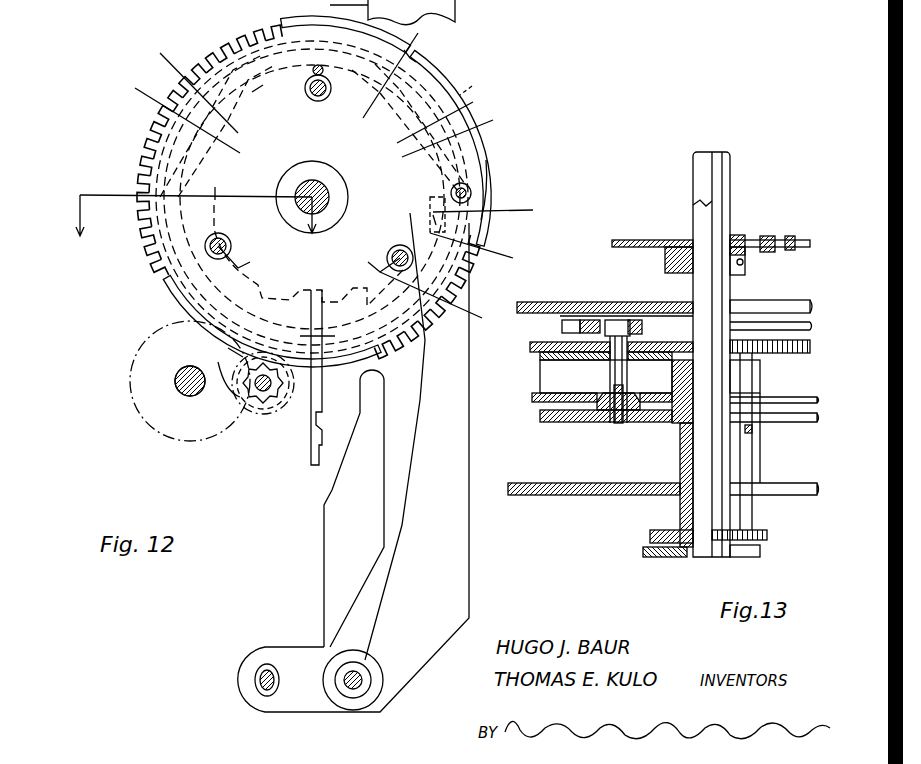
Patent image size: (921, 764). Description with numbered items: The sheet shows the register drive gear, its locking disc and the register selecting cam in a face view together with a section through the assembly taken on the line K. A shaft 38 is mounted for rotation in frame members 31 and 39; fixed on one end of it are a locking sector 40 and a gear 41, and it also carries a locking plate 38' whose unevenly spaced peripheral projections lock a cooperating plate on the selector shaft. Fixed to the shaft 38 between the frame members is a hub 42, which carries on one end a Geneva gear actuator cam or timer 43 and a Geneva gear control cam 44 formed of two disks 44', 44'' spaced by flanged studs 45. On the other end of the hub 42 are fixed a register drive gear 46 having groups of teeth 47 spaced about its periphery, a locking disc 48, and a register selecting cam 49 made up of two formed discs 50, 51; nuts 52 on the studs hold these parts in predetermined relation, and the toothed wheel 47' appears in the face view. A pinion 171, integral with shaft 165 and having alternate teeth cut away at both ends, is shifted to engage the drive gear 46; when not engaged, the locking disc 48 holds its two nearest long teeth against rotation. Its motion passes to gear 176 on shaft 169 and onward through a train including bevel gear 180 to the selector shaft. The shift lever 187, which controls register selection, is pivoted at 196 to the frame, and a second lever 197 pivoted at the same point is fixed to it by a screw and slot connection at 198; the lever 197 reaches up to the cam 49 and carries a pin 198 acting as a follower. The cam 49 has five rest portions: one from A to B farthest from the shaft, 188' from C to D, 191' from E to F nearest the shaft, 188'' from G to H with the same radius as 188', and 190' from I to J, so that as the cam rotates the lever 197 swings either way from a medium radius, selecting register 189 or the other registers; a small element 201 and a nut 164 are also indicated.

In FIG. 12, the toothed wheel 47' is at (291, 192).
In FIG. 12, the shaft 38 is at (319, 198).
In FIG. 13, the shaft 38 is at (730, 354).
In FIG. 12, the locking plate 38' is at (309, 255).
In FIG. 13, the locking plate 38' is at (716, 240).
In FIG. 12, the rest portion of cam 188'' is at (300, 30).
In FIG. 12, the groups of teeth 47 is at (460, 145).
In FIG. 12, the register selecting cam 49 is at (476, 83).
In FIG. 13, the register selecting cam 49 is at (570, 326).
In FIG. 12, the locking disc 48 is at (487, 165).
In FIG. 13, the locking disc 48 is at (530, 345).
In FIG. 12, the pin 198 is at (472, 190).
In FIG. 12, the stop pin 201 is at (470, 220).
In FIG. 12, the register 189 is at (445, 213).
In FIG. 12, the rest portion of cam 190' is at (408, 127).
In FIG. 12, the rest portion of cam 191' is at (220, 127).
In FIG. 12, the rest portion of cam 188' is at (244, 321).
In FIG. 12, the gear 176 is at (128, 388).
In FIG. 12, the shaft 169 is at (188, 392).
In FIG. 12, the shaft 165 is at (222, 362).
In FIG. 12, the pinion 171 is at (245, 392).
In FIG. 12, the bevel gear 180 is at (282, 418).
In FIG. 12, the shift lever 187 is at (330, 522).
In FIG. 12, the second lever 197 is at (458, 543).
In FIG. 12, the pivot 196 is at (380, 660).
In FIG. 13, the frame member 39 is at (575, 300).
In FIG. 13, the formed disc 51 is at (560, 302).
In FIG. 13, the formed disc 50 is at (590, 320).
In FIG. 13, the nuts 52 is at (640, 329).
In FIG. 13, the Geneva gear actuator cam 43 is at (645, 430).
In FIG. 13, the register drive gear 46 is at (545, 360).
In FIG. 13, the disk 44'' is at (606, 376).
In FIG. 13, the flanged studs 45 is at (630, 380).
In FIG. 13, the Geneva gear control cam 44 is at (586, 405).
In FIG. 13, the nut 164 is at (600, 420).
In FIG. 13, the disk 44' is at (596, 427).
In FIG. 13, the hub 42 is at (760, 378).
In FIG. 13, the frame member 31 is at (525, 483).
In FIG. 13, the gear 41 is at (790, 520).
In FIG. 13, the locking sector 40 is at (760, 550).
In FIG. 12, the cam portion boundary A is at (488, 210).
In FIG. 12, the cam portion boundary B is at (477, 247).
In FIG. 12, the cam portion boundary C is at (437, 301).
In FIG. 12, the cam portion boundary D is at (196, 188).
In FIG. 12, the cam portion boundary E is at (181, 117).
In FIG. 12, the cam portion boundary F is at (192, 88).
In FIG. 12, the cam portion boundary G is at (262, 93).
In FIG. 12, the cam portion boundary H is at (398, 69).
In FIG. 12, the cam portion boundary I is at (438, 118).
In FIG. 12, the cam portion boundary J is at (451, 134).
In FIG. 12, the section line K is at (199, 225).